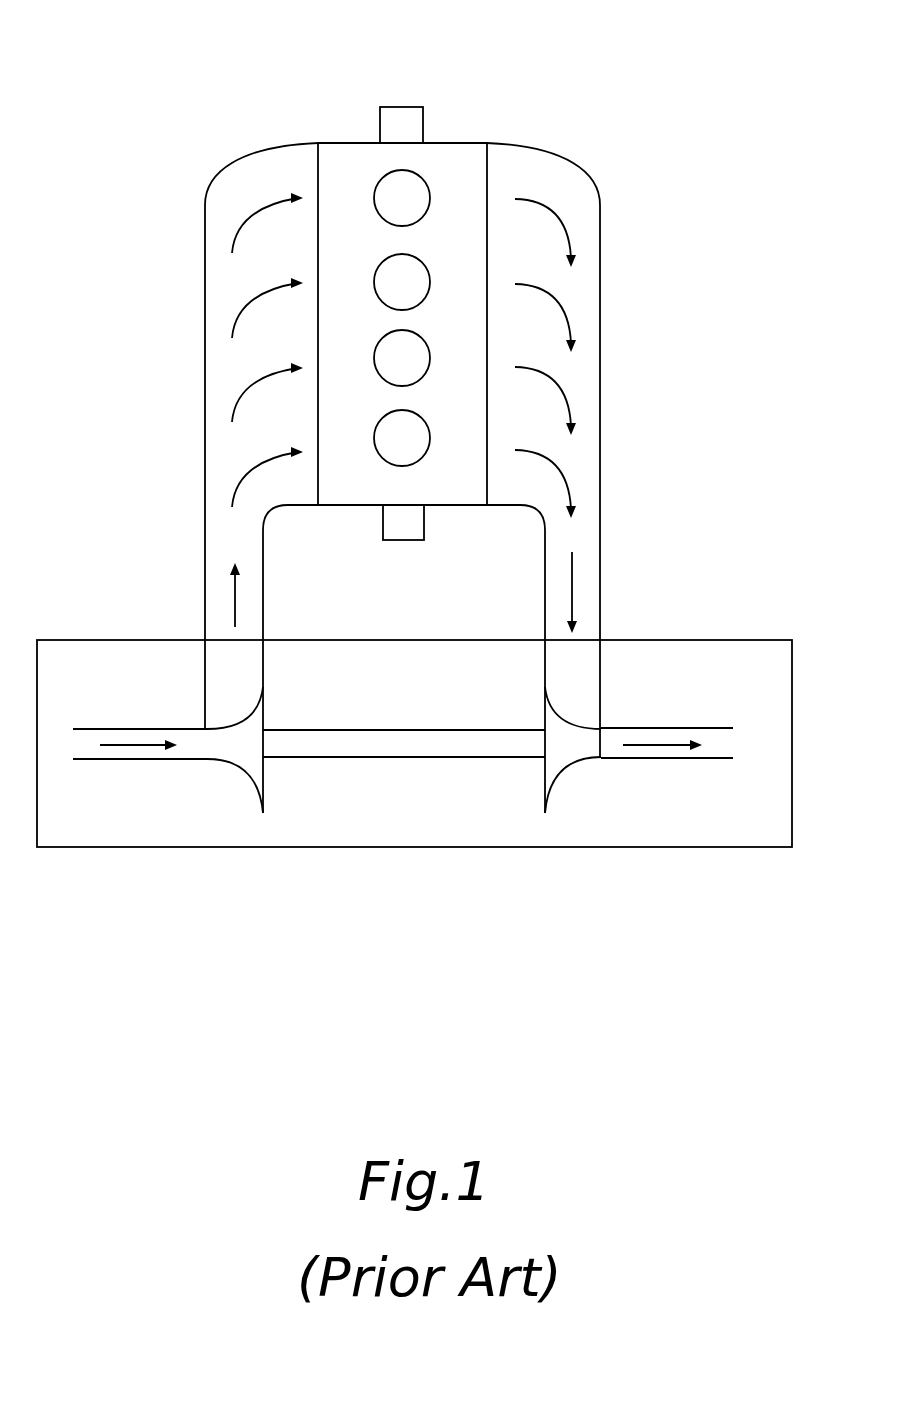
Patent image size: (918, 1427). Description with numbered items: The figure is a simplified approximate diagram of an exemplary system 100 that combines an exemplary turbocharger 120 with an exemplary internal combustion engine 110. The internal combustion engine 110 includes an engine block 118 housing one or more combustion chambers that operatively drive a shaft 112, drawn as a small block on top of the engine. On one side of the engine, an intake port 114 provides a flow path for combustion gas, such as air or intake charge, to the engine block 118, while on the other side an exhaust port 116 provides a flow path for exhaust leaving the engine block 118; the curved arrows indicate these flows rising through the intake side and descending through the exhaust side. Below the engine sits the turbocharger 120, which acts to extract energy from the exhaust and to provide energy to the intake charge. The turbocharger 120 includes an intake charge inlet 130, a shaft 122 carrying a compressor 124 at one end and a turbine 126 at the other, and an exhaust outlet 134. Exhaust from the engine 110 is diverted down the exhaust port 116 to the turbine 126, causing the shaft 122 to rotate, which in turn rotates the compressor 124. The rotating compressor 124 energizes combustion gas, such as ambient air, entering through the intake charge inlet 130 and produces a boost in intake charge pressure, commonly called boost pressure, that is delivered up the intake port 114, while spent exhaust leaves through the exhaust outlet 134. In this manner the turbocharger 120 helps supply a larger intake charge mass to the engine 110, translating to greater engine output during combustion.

The system 100 is at (591, 56).
The internal combustion engine 110 is at (361, 143).
The shaft 112 is at (403, 107).
The intake port 114 is at (227, 167).
The exhaust port 116 is at (592, 177).
The engine block 118 is at (424, 502).
The turbocharger 120 is at (668, 640).
The shaft 122 is at (403, 760).
The compressor 124 is at (265, 700).
The turbine 126 is at (543, 702).
The intake charge inlet 130 is at (165, 728).
The exhaust outlet 134 is at (668, 728).